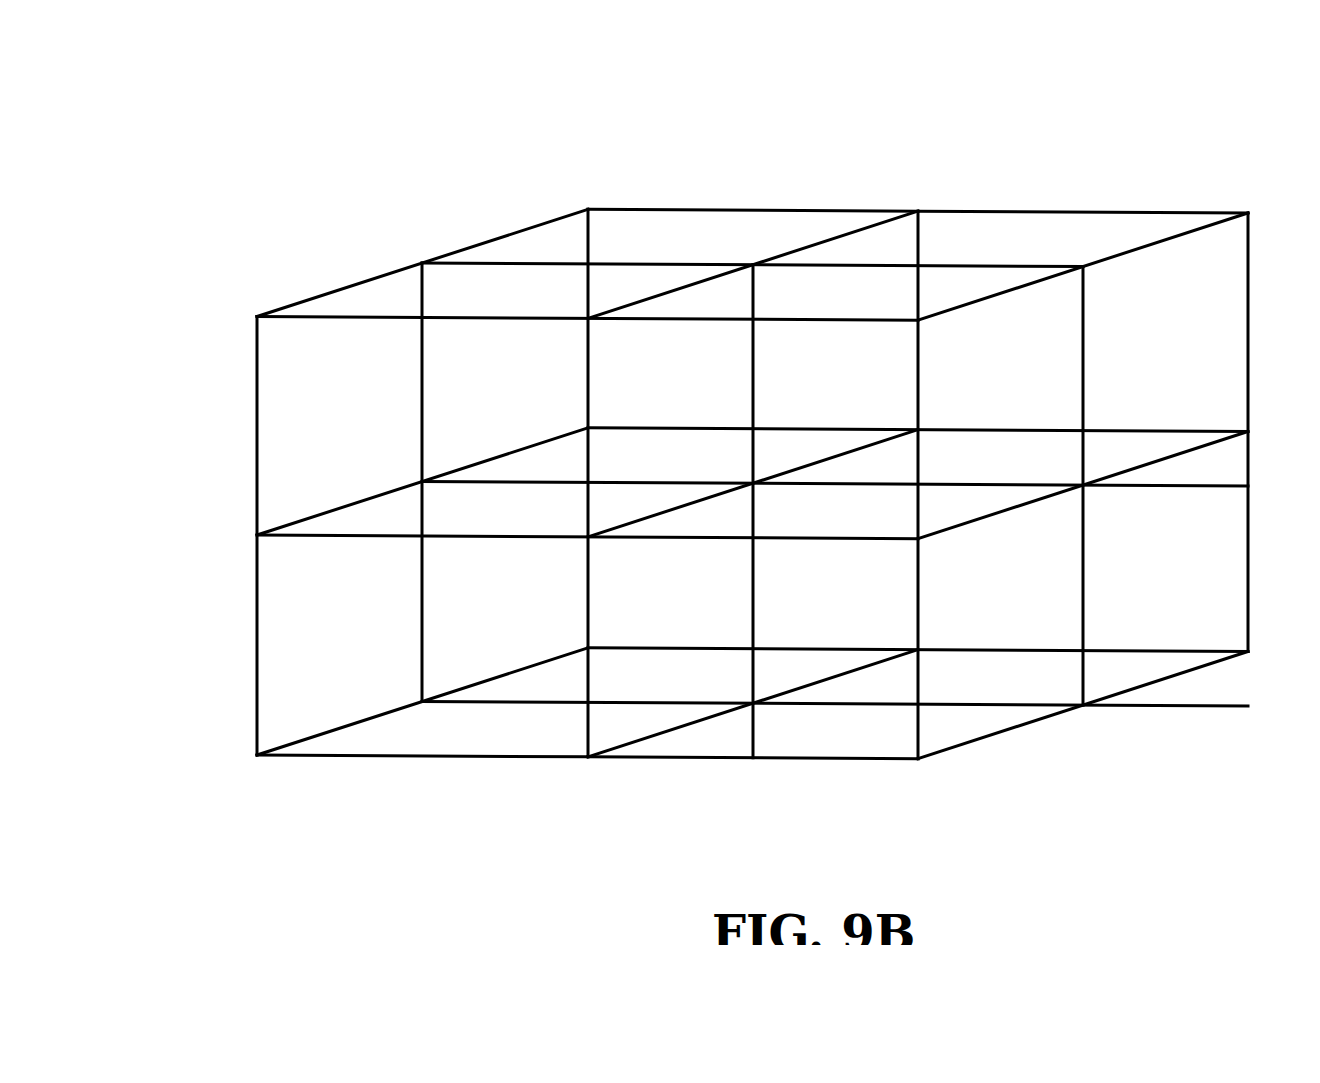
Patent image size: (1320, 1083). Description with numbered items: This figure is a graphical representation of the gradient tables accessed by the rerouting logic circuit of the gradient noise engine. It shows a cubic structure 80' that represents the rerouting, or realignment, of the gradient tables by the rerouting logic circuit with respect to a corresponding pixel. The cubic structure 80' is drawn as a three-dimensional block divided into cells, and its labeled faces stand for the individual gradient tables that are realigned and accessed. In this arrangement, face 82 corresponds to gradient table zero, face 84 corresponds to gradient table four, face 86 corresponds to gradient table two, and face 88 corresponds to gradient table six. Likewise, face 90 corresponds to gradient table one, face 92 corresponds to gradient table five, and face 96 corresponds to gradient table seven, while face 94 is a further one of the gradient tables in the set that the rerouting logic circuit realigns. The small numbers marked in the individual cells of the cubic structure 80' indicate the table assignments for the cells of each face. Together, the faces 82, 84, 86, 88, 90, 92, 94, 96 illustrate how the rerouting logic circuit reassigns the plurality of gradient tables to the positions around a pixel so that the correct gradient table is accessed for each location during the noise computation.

The cubic structure 80' is at (703, 421).
The face 82 is at (393, 756).
The face 84 is at (742, 758).
The face 86 is at (257, 440).
The face 88 is at (588, 410).
The face 90 is at (421, 623).
The face 92 is at (753, 609).
The face 94 is at (727, 210).
The face 96 is at (1097, 212).